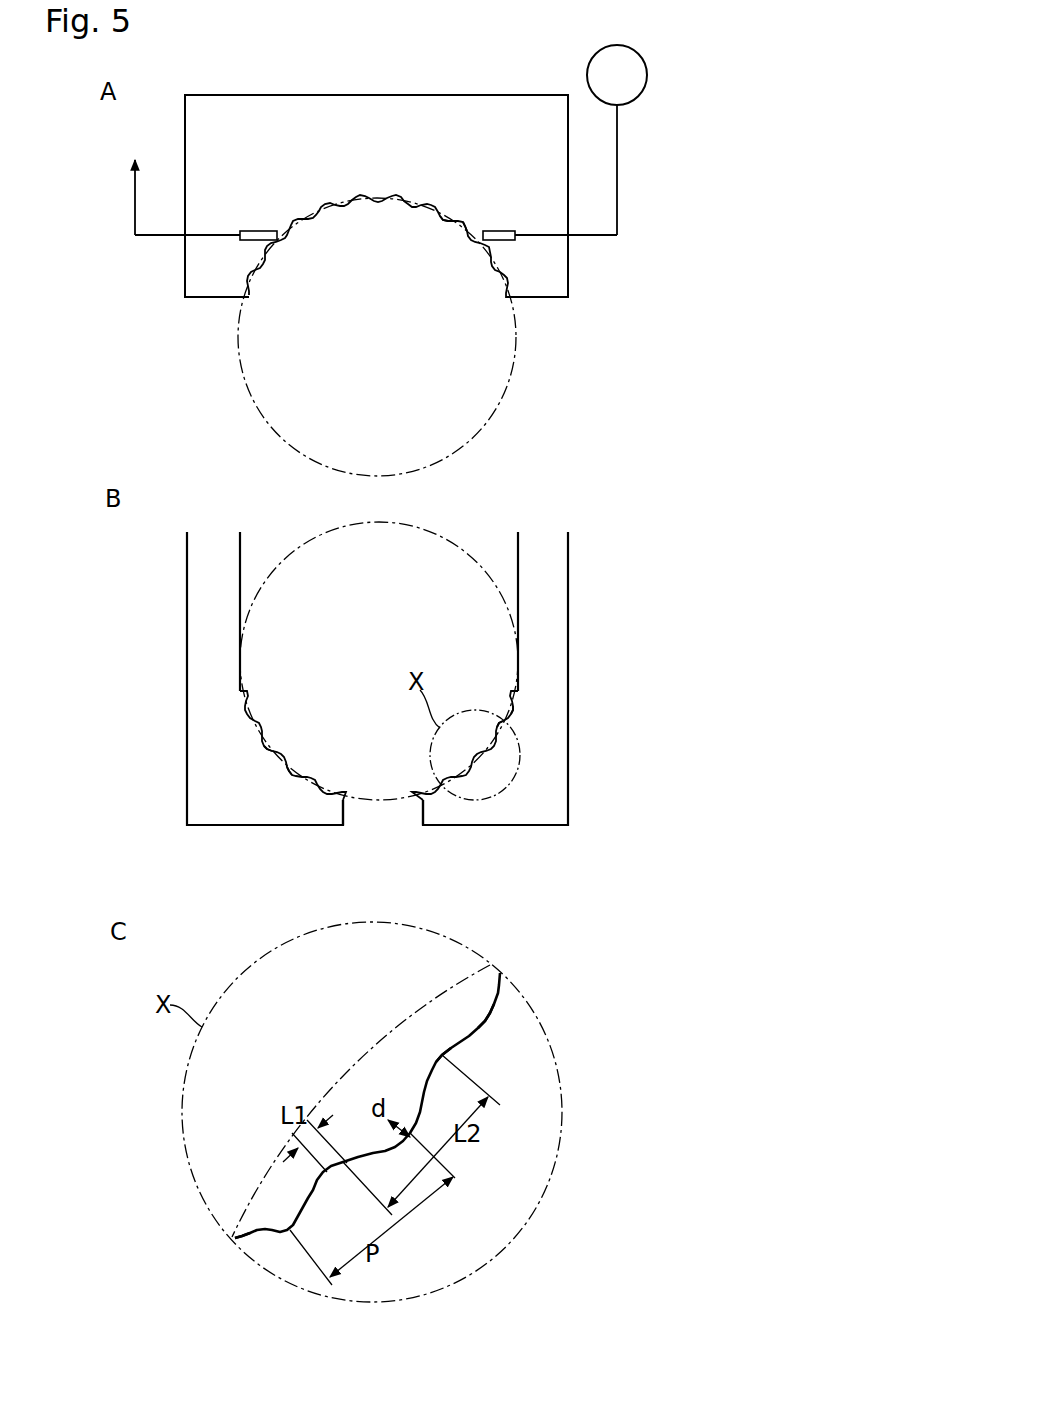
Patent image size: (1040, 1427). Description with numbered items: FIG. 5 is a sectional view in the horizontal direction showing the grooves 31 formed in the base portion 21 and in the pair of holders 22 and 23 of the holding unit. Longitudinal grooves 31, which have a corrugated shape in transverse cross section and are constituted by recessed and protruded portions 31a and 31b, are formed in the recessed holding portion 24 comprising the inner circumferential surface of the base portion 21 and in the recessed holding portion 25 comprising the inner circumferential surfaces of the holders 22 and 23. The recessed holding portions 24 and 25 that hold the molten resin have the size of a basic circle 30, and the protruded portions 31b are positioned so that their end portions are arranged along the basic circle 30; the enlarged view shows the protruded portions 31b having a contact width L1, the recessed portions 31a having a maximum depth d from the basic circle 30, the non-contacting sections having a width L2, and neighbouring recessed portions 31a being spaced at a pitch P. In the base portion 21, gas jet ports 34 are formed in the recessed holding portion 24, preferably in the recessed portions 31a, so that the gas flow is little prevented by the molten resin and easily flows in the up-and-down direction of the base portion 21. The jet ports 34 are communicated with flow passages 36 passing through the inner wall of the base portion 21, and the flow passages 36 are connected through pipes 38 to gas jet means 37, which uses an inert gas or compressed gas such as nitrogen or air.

The base portion 21 is at (403, 110).
The holder 22 is at (568, 683).
The holder 23 is at (187, 684).
The recessed holding portion 24 is at (265, 247).
The recessed holding portion 25 is at (300, 786).
The basic circle 30 is at (495, 413).
The longitudinal grooves 31 is at (342, 193).
The recessed portions 31a is at (450, 207).
The protruded portions 31b is at (468, 230).
The gas jet ports 34 is at (278, 236).
The flow passages 36 is at (548, 237).
The gas jet means 37 is at (635, 62).
The pipes 38 is at (617, 178).